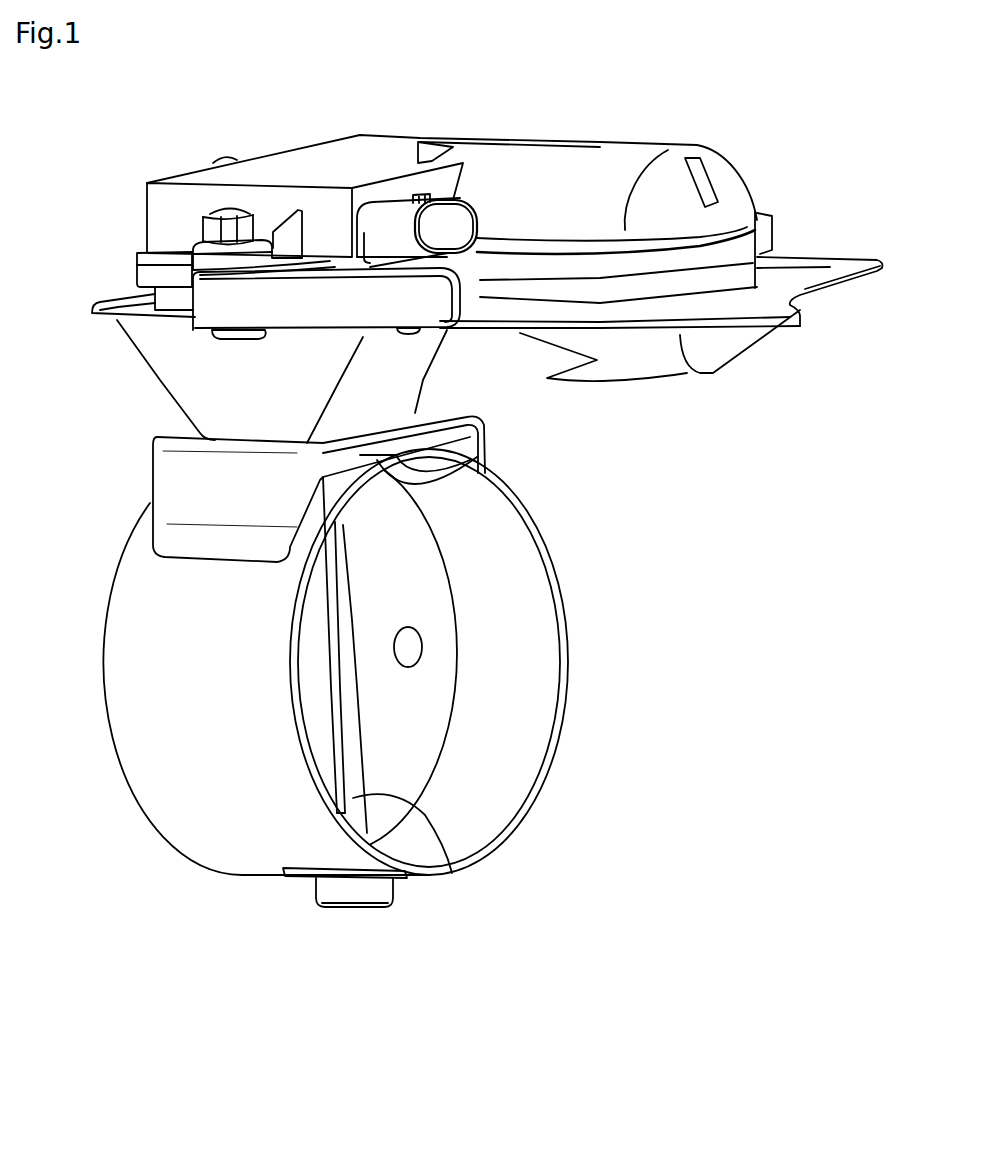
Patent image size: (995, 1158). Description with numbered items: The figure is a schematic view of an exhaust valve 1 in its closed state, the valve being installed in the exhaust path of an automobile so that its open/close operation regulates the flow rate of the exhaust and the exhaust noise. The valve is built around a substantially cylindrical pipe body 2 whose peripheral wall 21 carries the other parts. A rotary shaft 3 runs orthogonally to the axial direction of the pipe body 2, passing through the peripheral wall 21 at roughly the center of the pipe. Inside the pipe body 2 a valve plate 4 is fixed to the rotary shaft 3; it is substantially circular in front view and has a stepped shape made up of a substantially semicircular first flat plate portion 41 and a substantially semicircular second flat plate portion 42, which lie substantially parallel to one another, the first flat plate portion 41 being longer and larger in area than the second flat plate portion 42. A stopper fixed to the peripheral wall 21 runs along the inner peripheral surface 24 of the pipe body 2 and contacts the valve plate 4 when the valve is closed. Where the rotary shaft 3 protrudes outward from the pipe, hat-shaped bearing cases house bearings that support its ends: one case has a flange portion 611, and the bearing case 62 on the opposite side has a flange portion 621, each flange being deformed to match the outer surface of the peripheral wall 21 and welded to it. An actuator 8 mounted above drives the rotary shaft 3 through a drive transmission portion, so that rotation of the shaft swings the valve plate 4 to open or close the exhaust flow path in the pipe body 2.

The exhaust valve 1 is at (592, 519).
The pipe body 2 is at (570, 607).
The rotary shaft 3 is at (360, 800).
The valve plate 4 is at (457, 668).
The actuator 8 is at (594, 141).
The peripheral wall 21 is at (500, 847).
The inner peripheral surface 24 is at (500, 519).
The first flat plate portion 41 is at (420, 712).
The second flat plate portion 42 is at (313, 697).
The bearing case 62 is at (363, 906).
The flange portion 611 is at (383, 472).
The flange portion 621 is at (294, 878).